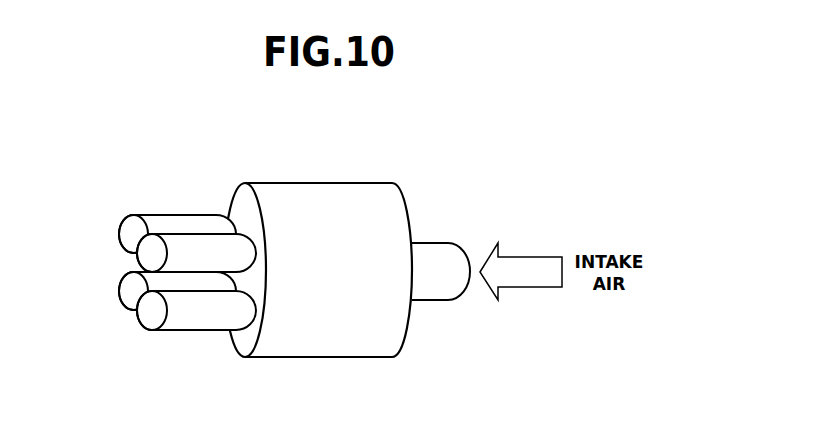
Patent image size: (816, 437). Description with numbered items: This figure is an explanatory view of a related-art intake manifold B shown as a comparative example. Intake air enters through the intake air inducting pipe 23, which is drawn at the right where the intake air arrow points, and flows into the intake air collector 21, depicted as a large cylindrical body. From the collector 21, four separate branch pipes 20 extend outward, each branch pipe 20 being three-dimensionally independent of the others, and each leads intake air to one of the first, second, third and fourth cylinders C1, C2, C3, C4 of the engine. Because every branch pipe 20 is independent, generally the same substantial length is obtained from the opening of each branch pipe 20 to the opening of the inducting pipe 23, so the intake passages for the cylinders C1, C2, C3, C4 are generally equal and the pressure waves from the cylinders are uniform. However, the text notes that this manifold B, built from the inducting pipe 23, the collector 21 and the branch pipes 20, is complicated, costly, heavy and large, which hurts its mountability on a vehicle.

The branch pipe 20 is at (174, 270).
The intake air collector 21 is at (343, 195).
The intake air inducting pipe 23 is at (427, 287).
The intake manifold B is at (296, 265).
The first cylinder C1 is at (164, 234).
The second cylinder C2 is at (164, 294).
The third cylinder C3 is at (183, 316).
The fourth cylinder C4 is at (179, 253).